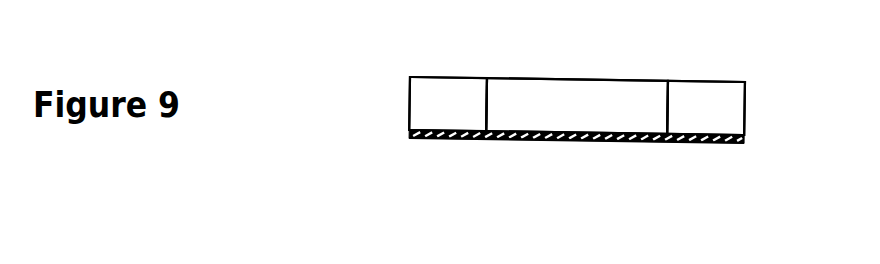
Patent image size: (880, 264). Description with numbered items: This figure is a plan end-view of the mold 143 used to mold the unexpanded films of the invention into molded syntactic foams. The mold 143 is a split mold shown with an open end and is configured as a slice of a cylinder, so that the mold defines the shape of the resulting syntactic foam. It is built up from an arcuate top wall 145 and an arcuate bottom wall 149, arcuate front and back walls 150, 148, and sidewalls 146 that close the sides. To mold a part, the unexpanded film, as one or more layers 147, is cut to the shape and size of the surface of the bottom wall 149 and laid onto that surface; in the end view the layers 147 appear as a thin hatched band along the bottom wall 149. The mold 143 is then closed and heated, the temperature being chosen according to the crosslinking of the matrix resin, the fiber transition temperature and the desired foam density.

The mold 143 is at (452, 181).
The top wall 145 is at (487, 78).
The sidewalls 146 is at (410, 108).
The film layers 147 is at (683, 143).
The back wall 148 is at (563, 97).
The bottom wall 149 is at (440, 139).
The front wall 150 is at (652, 80).